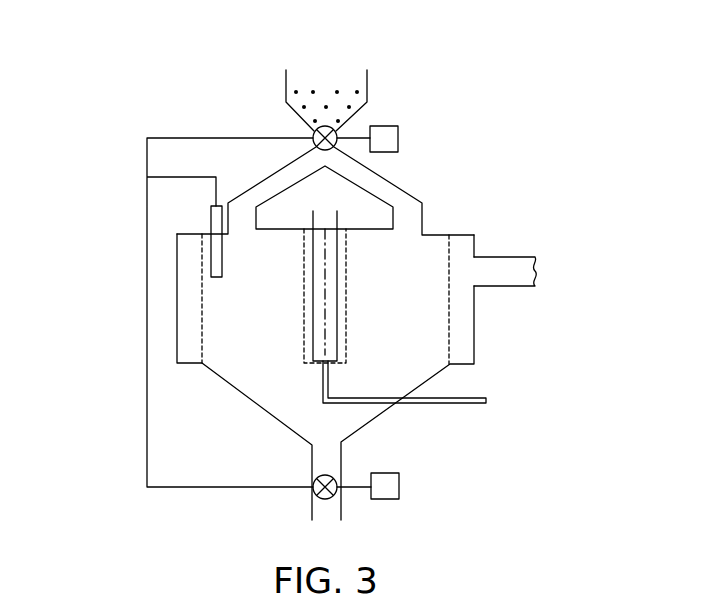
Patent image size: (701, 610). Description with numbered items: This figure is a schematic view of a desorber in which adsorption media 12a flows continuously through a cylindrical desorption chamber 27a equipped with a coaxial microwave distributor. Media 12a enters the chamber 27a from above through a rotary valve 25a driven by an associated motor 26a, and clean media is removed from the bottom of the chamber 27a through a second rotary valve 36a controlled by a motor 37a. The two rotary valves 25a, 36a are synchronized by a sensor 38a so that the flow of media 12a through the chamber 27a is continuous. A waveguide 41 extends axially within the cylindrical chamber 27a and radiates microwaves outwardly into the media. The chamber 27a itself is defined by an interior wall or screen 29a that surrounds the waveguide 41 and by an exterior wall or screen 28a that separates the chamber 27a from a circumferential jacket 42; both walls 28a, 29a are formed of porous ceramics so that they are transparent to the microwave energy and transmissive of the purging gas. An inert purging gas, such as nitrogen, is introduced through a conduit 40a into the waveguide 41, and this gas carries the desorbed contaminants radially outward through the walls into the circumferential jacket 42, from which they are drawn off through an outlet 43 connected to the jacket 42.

The media 12a is at (358, 100).
The rotary valve 25a is at (313, 132).
The motor 26a is at (388, 138).
The desorption chamber 27a is at (432, 243).
The outlet 43 is at (523, 258).
The circumferential jacket 42 is at (463, 340).
The exterior wall or screen 28a is at (202, 308).
The sensor 38a is at (210, 222).
The interior wall or screen 29a is at (303, 303).
The waveguide 41 is at (332, 293).
The conduit 40a is at (448, 403).
The rotary valve 36a is at (314, 482).
The motor 37a is at (383, 497).